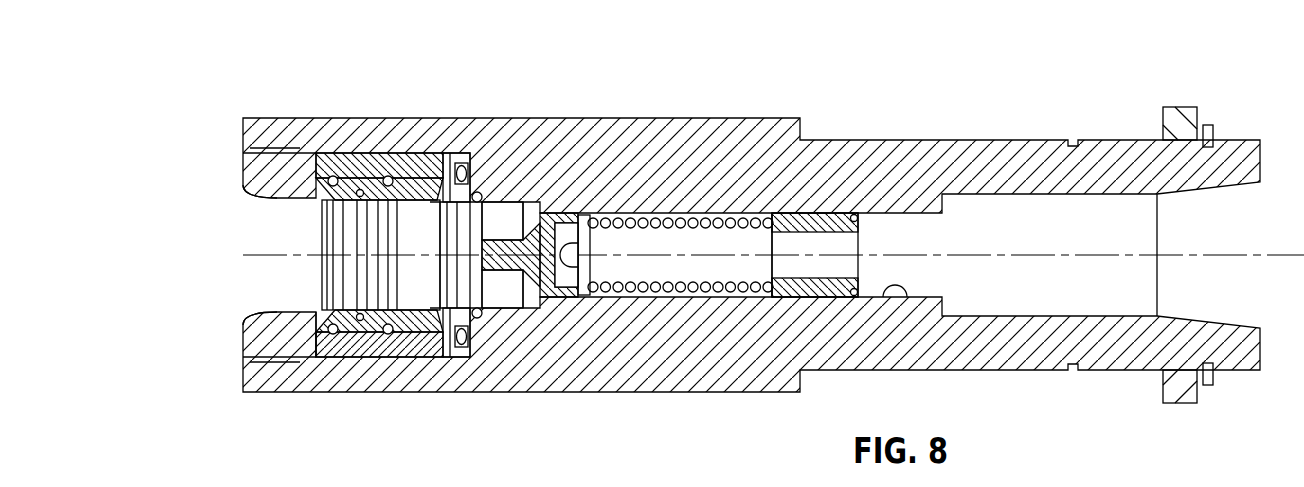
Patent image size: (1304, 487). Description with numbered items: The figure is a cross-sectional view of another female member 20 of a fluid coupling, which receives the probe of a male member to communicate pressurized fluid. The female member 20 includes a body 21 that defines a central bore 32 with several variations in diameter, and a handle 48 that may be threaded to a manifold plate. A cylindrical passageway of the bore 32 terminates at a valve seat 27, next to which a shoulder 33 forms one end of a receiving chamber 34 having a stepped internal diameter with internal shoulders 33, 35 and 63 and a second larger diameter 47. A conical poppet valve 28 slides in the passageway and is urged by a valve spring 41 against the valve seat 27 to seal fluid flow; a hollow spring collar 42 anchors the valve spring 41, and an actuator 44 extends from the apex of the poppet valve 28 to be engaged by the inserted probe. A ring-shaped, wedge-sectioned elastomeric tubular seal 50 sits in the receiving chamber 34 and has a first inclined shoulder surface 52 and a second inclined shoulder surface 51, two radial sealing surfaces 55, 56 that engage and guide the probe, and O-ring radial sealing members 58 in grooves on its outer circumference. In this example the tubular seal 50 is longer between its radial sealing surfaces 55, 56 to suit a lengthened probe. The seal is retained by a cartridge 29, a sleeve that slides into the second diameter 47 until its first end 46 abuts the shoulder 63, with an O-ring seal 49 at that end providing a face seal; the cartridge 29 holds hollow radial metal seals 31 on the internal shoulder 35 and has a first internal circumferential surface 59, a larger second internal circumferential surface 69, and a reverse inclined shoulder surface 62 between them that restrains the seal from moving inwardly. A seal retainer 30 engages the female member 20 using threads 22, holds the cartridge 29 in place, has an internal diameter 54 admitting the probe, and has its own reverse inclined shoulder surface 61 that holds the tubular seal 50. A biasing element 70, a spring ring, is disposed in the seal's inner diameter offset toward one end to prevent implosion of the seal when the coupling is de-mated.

The female member 20 is at (636, 100).
The body 21 is at (751, 236).
The threads 22 is at (303, 395).
The valve seat 27 is at (627, 315).
The poppet valve 28 is at (575, 198).
The cartridge 29 is at (598, 343).
The seal retainer 30 is at (228, 284).
The radial metal seals 31 is at (524, 173).
The bore 32 is at (934, 341).
The shoulder 33 is at (590, 322).
The receiving chamber 34 is at (579, 339).
The internal shoulder 35 is at (566, 361).
The valve spring 41 is at (815, 192).
The spring collar 42 is at (899, 192).
The actuator 44 is at (538, 179).
The first end of the cartridge 46 is at (497, 341).
The second larger diameter 47 is at (455, 160).
The handle 48 is at (1160, 231).
The O-ring seal 49 is at (513, 380).
The tubular seal 50 is at (379, 377).
The second inclined shoulder surface 51 is at (254, 117).
The first inclined shoulder surface 52 is at (463, 198).
The internal diameter 54 is at (248, 317).
The radial sealing surface 55 is at (297, 255).
The radial sealing surface 56 is at (298, 255).
The radial sealing members 58 is at (319, 192).
The first internal circumferential surface 59 is at (472, 205).
The reverse inclined shoulder surface 61 is at (236, 237).
The reverse inclined shoulder surface 62 is at (375, 132).
The shoulder 63 is at (514, 107).
The second internal circumferential surface 69 is at (305, 174).
The biasing element 70 is at (310, 255).